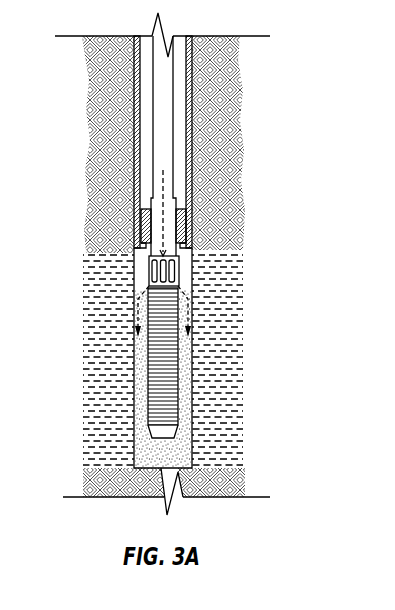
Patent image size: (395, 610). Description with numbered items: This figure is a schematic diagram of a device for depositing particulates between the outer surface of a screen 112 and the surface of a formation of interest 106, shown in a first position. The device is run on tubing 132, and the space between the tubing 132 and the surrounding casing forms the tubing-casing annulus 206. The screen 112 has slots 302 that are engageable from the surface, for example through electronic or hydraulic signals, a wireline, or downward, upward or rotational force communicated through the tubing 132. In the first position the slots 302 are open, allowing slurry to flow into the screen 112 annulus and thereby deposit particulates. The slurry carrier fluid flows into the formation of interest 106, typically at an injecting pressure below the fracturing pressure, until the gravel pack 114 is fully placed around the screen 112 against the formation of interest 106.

The formation of interest 106 is at (220, 332).
The screen 112 is at (148, 340).
The gravel pack 114 is at (183, 452).
The tubing 132 is at (173, 118).
The tubing-casing annulus 206 is at (182, 388).
The slots 302 is at (174, 268).